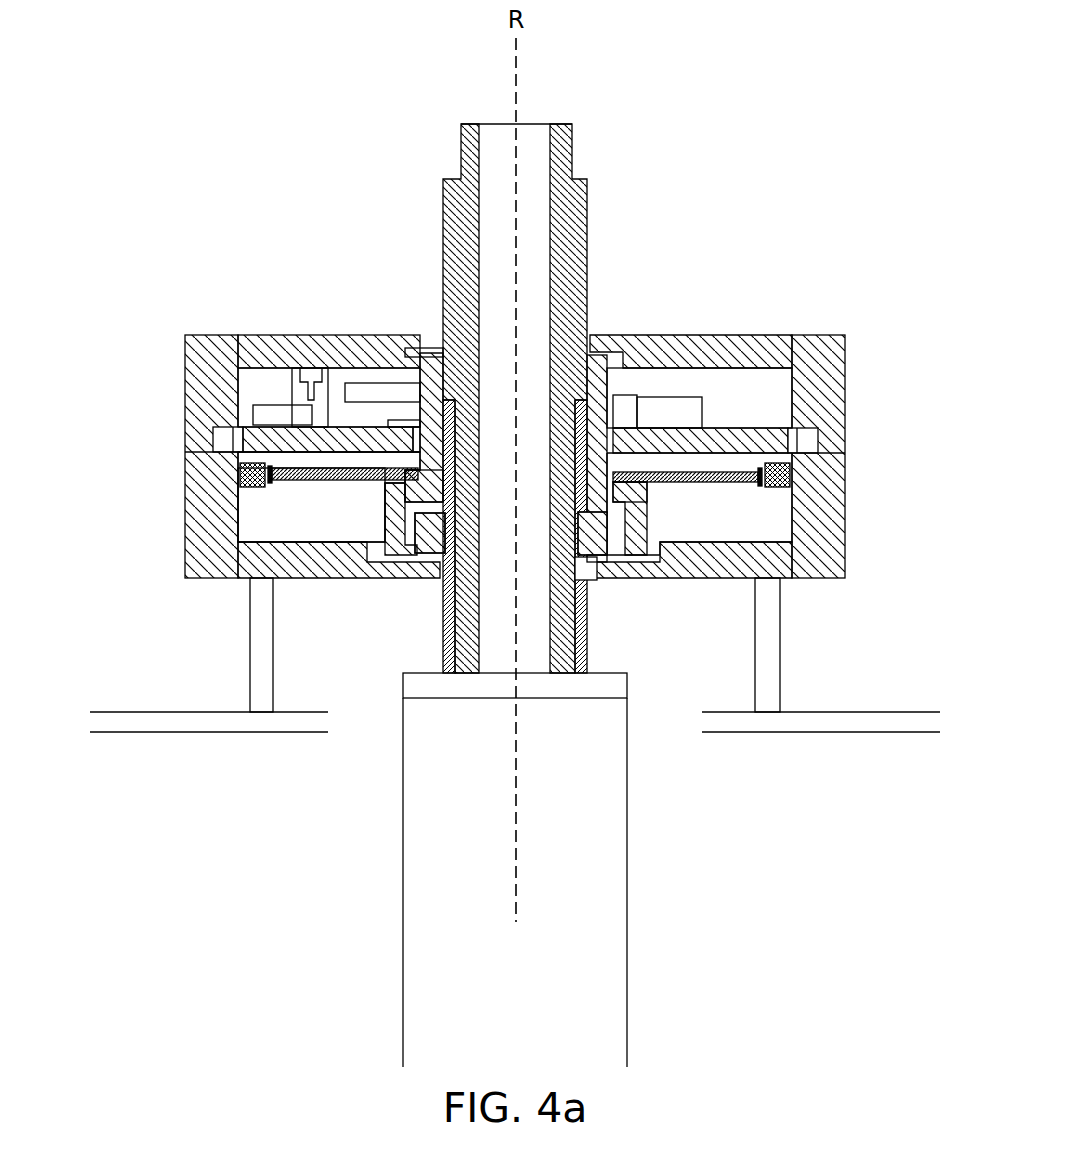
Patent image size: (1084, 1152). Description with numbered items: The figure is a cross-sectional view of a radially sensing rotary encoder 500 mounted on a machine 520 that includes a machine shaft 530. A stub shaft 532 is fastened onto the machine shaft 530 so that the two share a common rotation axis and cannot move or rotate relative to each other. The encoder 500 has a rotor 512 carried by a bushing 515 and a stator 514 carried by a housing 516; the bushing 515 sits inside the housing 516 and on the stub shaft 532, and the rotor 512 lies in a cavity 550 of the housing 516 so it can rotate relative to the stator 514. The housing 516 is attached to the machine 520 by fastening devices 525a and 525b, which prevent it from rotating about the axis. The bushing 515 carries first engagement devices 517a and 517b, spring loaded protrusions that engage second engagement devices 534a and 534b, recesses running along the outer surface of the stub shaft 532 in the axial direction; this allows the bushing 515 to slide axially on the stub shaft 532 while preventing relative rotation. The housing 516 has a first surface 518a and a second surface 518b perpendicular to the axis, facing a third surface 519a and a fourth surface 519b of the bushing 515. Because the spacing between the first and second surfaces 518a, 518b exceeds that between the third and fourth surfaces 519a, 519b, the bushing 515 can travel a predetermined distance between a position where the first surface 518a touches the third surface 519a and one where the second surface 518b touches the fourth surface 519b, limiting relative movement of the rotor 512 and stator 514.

The rotary encoder 500 is at (151, 283).
The rotor 512 is at (270, 487).
The stator 514 is at (778, 466).
The bushing 515 is at (383, 507).
The housing 516 is at (760, 332).
The first engagement device 517a is at (432, 526).
The first engagement device 517b is at (590, 520).
The first surface 518a is at (418, 363).
The second surface 518b is at (608, 550).
The third surface 519a is at (435, 351).
The fourth surface 519b is at (593, 561).
The machine 520 is at (121, 710).
The fastening device 525a is at (249, 658).
The fastening device 525b is at (781, 650).
The machine shaft 530 is at (401, 922).
The stub shaft 532 is at (592, 226).
The second engagement device 534a is at (443, 648).
The second engagement device 534b is at (587, 640).
The cavity 550 is at (290, 508).